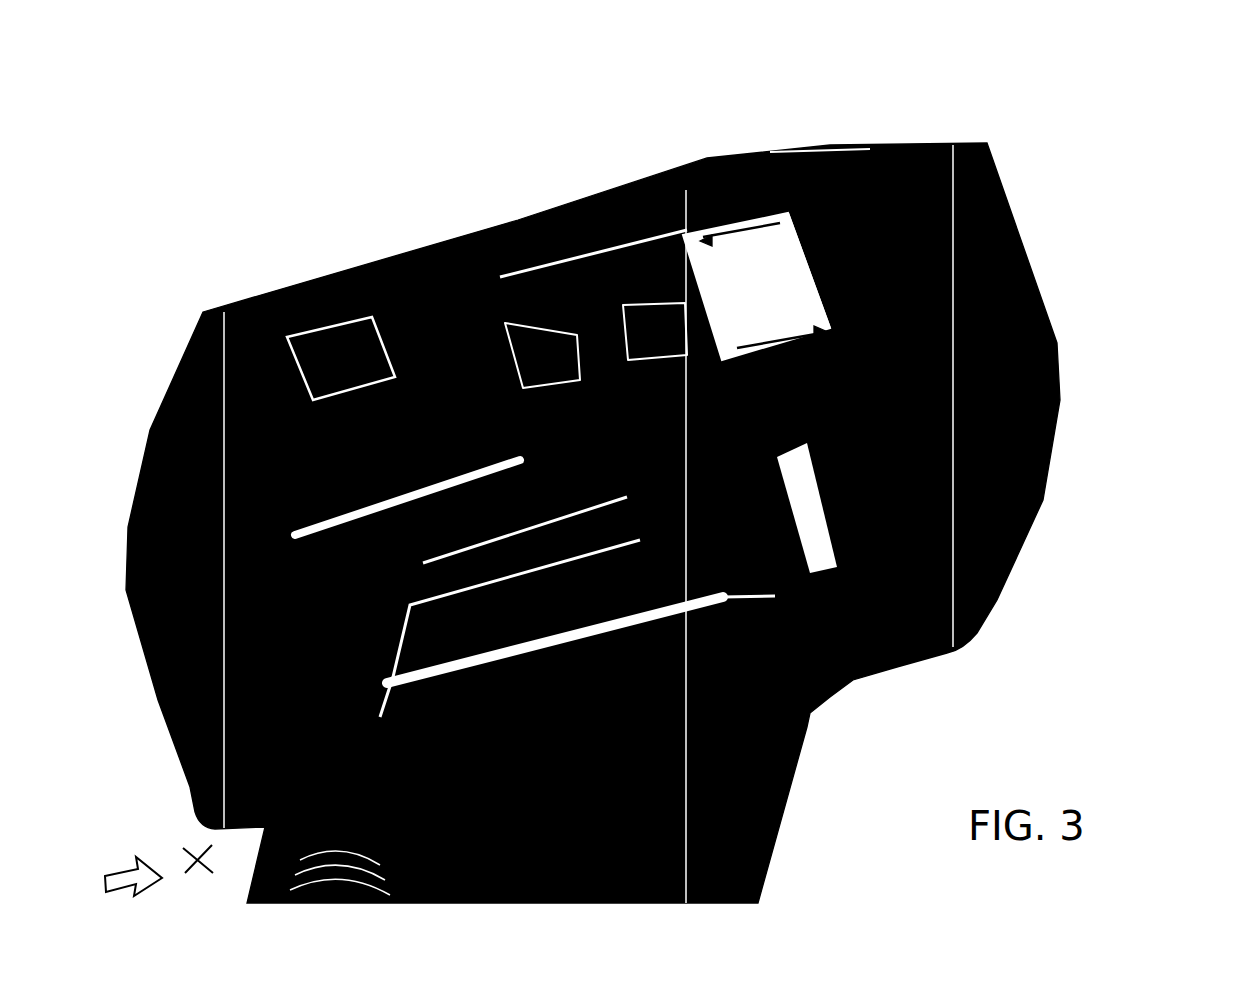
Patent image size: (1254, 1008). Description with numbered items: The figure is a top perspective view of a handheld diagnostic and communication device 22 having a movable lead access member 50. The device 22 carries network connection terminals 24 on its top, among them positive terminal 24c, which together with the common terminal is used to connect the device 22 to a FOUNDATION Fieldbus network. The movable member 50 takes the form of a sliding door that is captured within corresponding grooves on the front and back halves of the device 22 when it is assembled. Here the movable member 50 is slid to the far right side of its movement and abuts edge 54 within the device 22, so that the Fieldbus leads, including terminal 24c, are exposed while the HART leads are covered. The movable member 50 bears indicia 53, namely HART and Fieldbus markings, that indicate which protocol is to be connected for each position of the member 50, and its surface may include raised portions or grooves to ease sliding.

The handheld diagnostic and communication device 22 is at (1045, 280).
The positive terminal 24c is at (560, 330).
The network connection terminal 24 is at (632, 327).
The movable lead access member 50 is at (740, 207).
The indicia 53 is at (830, 143).
The edge 54 is at (810, 260).